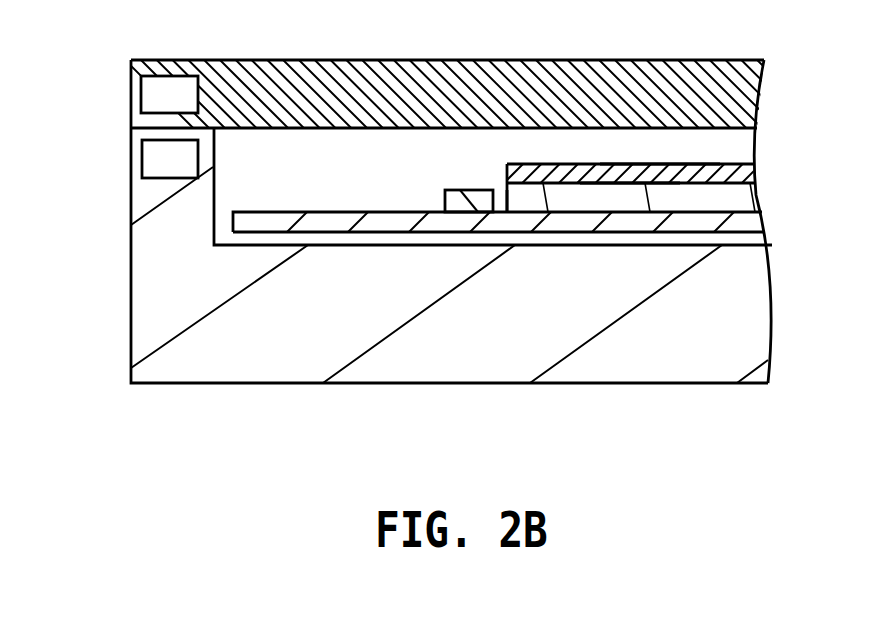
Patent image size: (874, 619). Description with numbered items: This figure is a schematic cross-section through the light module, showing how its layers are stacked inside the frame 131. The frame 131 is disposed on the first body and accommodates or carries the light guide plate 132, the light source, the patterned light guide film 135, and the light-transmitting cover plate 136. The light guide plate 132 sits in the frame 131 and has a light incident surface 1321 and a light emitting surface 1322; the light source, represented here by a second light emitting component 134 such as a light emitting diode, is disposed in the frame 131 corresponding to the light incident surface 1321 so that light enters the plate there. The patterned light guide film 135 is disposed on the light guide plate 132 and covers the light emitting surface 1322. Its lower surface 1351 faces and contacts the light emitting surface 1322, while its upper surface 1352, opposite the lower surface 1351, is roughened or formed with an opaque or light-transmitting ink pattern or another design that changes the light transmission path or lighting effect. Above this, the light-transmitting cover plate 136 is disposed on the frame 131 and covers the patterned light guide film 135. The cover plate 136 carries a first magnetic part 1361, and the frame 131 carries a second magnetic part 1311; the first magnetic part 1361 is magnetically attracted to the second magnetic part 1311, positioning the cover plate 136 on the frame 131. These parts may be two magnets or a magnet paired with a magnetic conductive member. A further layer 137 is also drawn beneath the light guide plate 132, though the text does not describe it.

The frame 131 is at (157, 317).
The second magnetic part 1311 is at (157, 160).
The light-transmitting cover plate 136 is at (745, 98).
The first magnetic part 1361 is at (157, 93).
The first conductive layer 137 is at (238, 222).
The second light emitting component 134 is at (468, 190).
The light guide plate 132 is at (745, 197).
The light incident surface 1321 is at (503, 210).
The light emitting surface 1322 is at (559, 178).
The patterned light guide film 135 is at (745, 175).
The lower surface 1351 is at (626, 189).
The upper surface 1352 is at (661, 160).